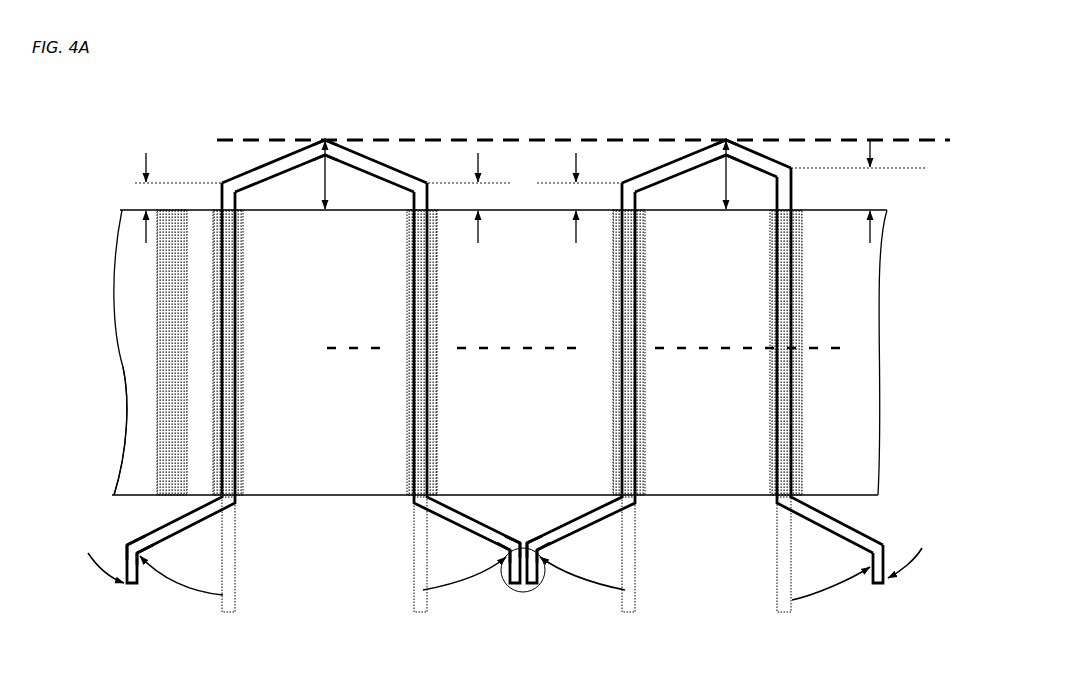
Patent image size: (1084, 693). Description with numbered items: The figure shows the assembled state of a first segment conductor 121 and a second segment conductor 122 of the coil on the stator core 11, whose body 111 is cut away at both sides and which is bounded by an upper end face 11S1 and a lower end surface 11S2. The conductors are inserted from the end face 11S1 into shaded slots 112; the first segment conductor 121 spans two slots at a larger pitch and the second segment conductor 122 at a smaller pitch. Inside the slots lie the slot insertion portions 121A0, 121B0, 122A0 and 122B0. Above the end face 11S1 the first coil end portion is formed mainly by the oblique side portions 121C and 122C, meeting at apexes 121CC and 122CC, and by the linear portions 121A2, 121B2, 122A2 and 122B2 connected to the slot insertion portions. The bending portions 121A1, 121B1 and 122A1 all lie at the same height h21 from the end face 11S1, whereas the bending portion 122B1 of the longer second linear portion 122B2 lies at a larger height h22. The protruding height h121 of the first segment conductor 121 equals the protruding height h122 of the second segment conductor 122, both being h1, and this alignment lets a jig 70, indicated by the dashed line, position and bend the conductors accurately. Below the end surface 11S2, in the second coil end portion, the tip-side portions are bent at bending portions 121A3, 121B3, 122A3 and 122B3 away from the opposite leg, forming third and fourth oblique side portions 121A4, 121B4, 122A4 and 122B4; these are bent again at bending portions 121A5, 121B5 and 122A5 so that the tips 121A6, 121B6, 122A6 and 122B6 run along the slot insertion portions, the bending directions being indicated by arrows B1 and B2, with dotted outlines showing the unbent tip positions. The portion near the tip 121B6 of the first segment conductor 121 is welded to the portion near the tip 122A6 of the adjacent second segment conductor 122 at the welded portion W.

The stator core 11 is at (135, 372).
The end face of the stator core 11S1 is at (120, 210).
The end surface of the stator core 11S2 is at (112, 495).
The substrate body 111 is at (200, 440).
The slot 112 is at (213, 318).
The jig 70 is at (257, 140).
The first segment conductor 121 is at (466, 369).
The slot insertion portion 121A0 is at (220, 293).
The bending portion 121A1 is at (220, 192).
The linear portion 121A2 is at (225, 202).
The bending portion 121A3 is at (228, 512).
The third oblique side portion 121A4 is at (187, 523).
The bending portion 121A5 is at (127, 548).
The tip 121A6 is at (135, 583).
The slot insertion portion 121B0 is at (415, 392).
The bending portion 121B1 is at (428, 183).
The linear portion 121B2 is at (413, 195).
The bending portion 121B3 is at (420, 510).
The fourth oblique side portion 121B4 is at (452, 533).
The bending portion 121B5 is at (508, 543).
The tip 121B6 is at (513, 585).
The oblique side portion 121C is at (297, 153).
The apex of first lead 121CC is at (325, 140).
The second segment conductor 122 is at (720, 369).
The slot insertion portion 122A0 is at (613, 318).
The bending portion 122A1 is at (633, 195).
The first linear portion 122A2 is at (620, 200).
The bending portion 122A3 is at (627, 507).
The third oblique side portion 122A4 is at (600, 535).
The bending portion 122A5 is at (538, 543).
The tip 122A6 is at (537, 585).
The slot insertion portion 122B0 is at (778, 392).
The bending portion 122B1 is at (788, 168).
The second linear portion 122B2 is at (790, 197).
The bending portion 122B3 is at (783, 512).
The fourth oblique side portion 122B4 is at (837, 532).
The tip 122B6 is at (878, 583).
The oblique side portion 122C is at (688, 155).
The apex of second lead 122CC is at (726, 140).
The first bending direction B1 is at (173, 587).
The second bending direction B2 is at (103, 580).
The welded portion W is at (527, 595).
The height h21 is at (351, 194).
The height h22 is at (858, 192).
The protruding height h121 is at (305, 175).
The protruding height h122 is at (705, 175).
The height h1 is at (512, 183).